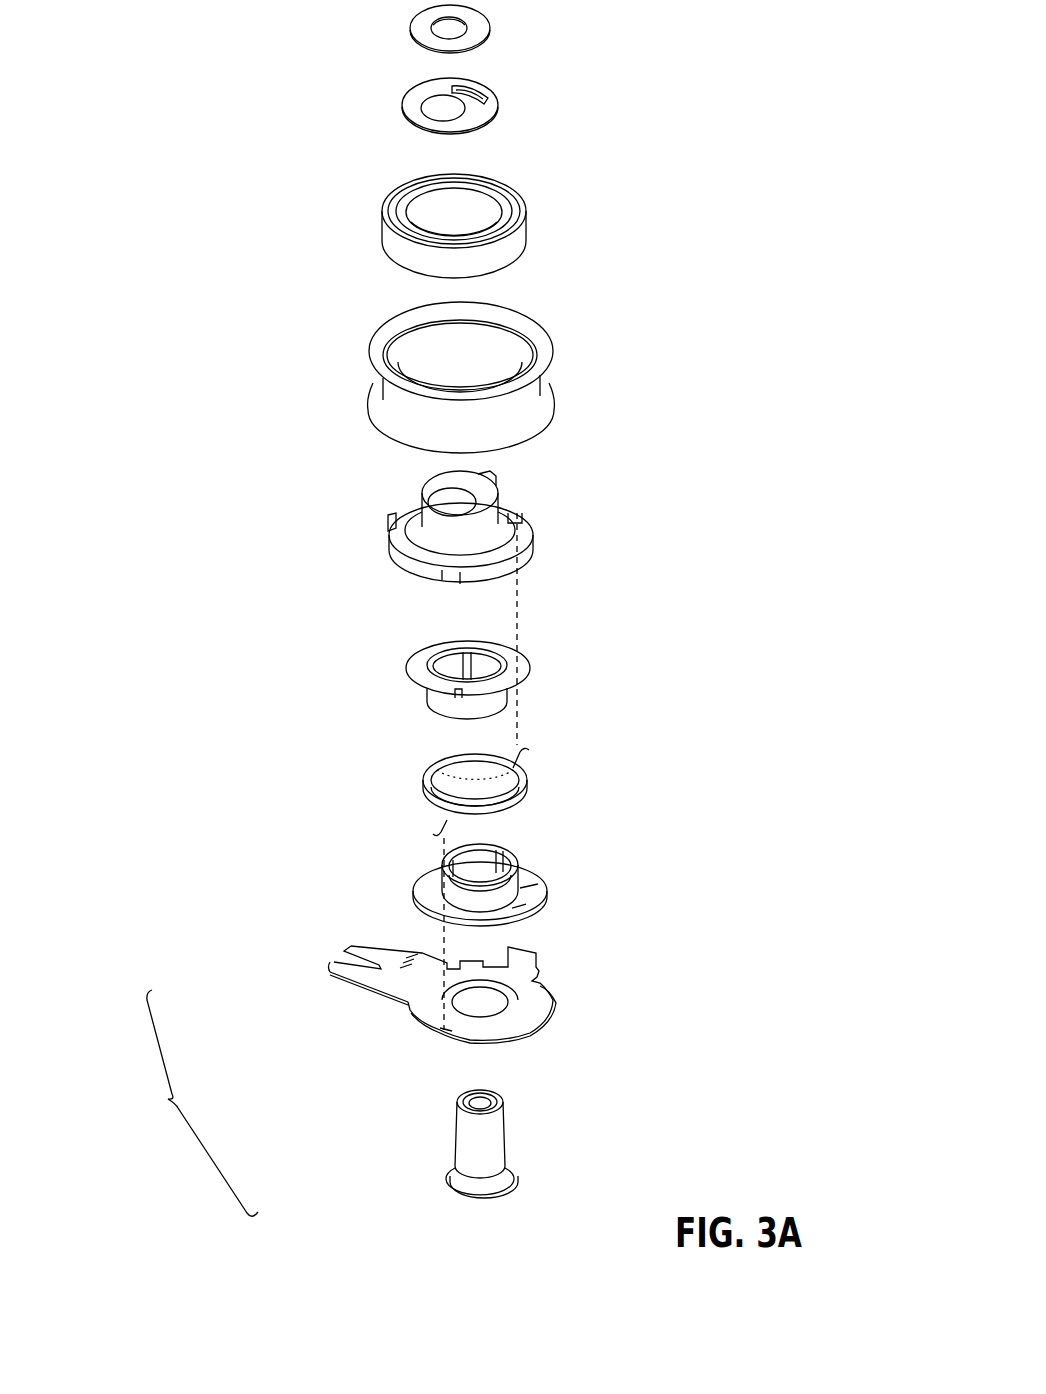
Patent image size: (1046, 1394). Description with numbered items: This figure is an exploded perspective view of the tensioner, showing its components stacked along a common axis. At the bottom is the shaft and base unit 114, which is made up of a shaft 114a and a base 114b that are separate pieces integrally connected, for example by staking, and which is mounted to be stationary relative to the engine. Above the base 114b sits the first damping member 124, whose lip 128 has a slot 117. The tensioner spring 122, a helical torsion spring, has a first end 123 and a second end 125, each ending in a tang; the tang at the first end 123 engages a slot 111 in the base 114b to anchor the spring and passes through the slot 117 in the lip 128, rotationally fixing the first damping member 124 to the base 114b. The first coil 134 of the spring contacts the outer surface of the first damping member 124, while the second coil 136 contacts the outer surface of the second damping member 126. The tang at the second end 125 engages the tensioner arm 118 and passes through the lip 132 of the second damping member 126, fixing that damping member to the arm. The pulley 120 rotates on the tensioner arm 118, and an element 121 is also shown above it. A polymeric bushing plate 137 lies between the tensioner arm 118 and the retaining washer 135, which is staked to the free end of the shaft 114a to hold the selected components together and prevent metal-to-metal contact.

The slot 111 is at (440, 1035).
The shaft and base unit 114 is at (188, 1103).
The shaft 114a is at (480, 1147).
The base 114b is at (358, 1016).
The slot 117 is at (438, 918).
The tensioner arm 118 is at (497, 562).
The pulley 120 is at (383, 387).
The ring 121 is at (390, 247).
The tensioner spring 122 is at (485, 769).
The first end 123 is at (435, 832).
The first damping member 124 is at (475, 934).
The second end 125 is at (523, 750).
The second damping member 126 is at (518, 683).
The lip 128 is at (528, 920).
The lip 132 is at (488, 680).
The first coil 134 is at (437, 822).
The retaining washer 135 is at (418, 33).
The second coil 136 is at (447, 760).
The polymeric bushing plate 137 is at (410, 107).